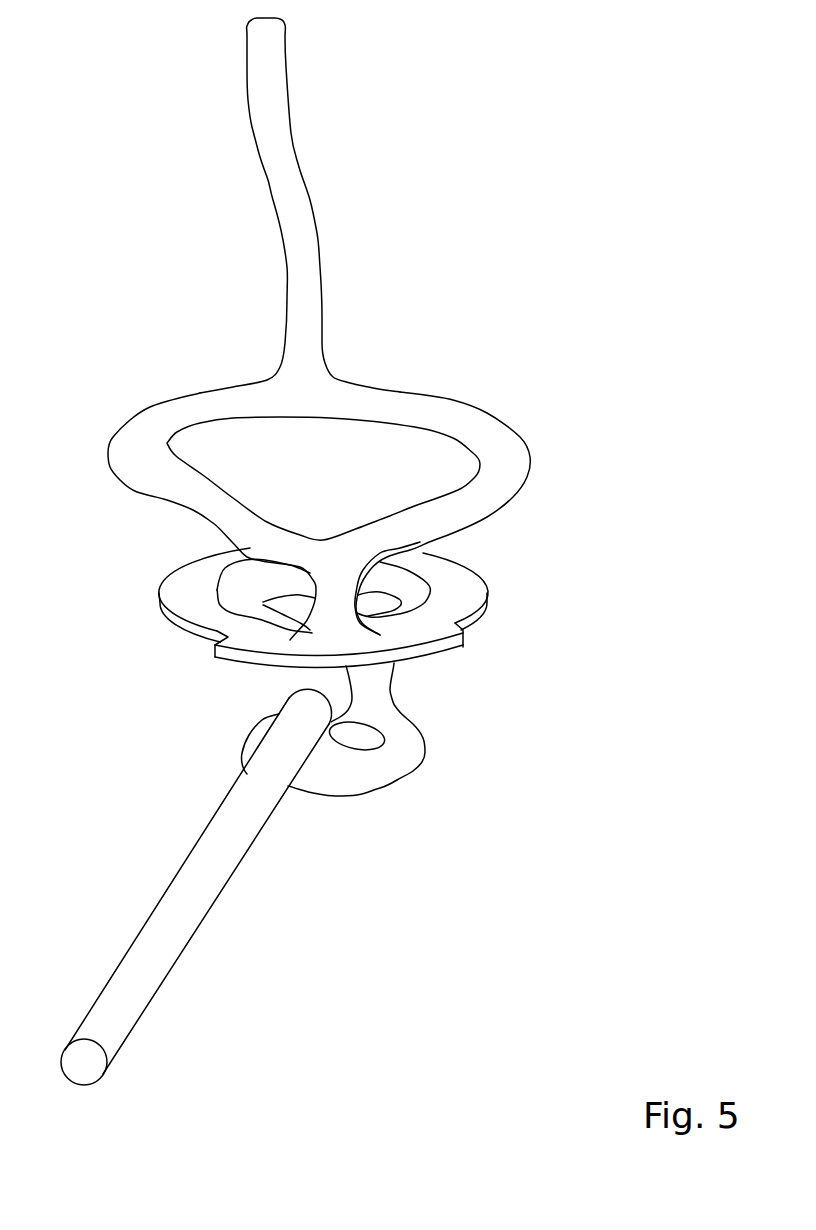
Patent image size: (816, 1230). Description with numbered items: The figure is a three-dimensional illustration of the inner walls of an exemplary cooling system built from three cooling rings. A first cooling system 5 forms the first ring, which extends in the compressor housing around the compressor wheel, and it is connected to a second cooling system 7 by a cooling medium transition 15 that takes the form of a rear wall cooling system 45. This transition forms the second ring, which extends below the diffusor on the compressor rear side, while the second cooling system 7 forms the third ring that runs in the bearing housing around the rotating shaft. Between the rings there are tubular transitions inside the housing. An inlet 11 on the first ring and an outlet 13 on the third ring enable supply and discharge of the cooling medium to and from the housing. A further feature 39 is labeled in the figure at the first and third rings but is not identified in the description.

The first cooling system 5 is at (528, 445).
The second cooling system 7 is at (418, 770).
The inlet 11 is at (272, 62).
The outlet 13 is at (120, 1003).
The cooling medium transition 15 is at (490, 597).
The opening 39 is at (418, 413).
The rear wall cooling system 45 is at (160, 600).